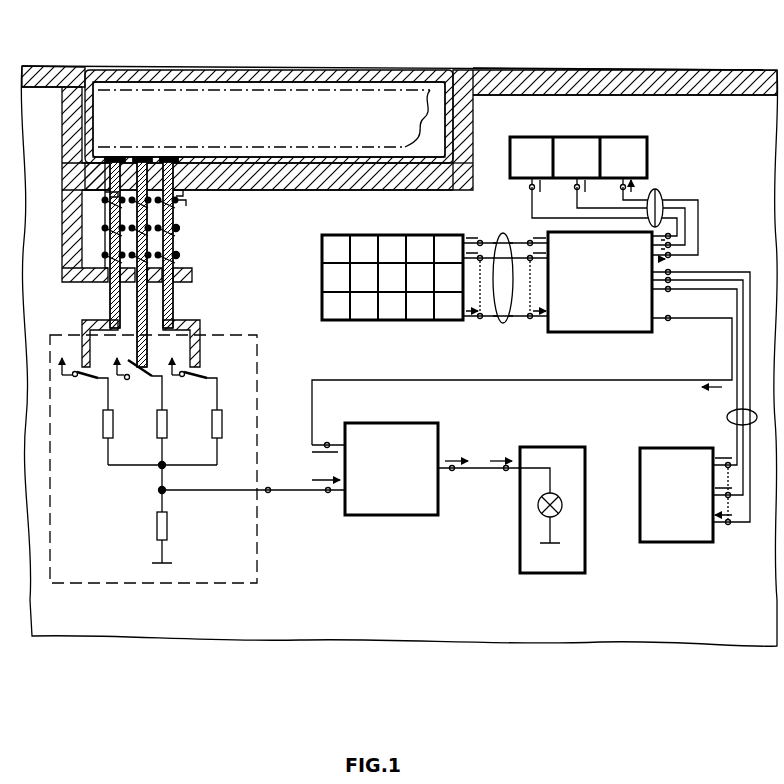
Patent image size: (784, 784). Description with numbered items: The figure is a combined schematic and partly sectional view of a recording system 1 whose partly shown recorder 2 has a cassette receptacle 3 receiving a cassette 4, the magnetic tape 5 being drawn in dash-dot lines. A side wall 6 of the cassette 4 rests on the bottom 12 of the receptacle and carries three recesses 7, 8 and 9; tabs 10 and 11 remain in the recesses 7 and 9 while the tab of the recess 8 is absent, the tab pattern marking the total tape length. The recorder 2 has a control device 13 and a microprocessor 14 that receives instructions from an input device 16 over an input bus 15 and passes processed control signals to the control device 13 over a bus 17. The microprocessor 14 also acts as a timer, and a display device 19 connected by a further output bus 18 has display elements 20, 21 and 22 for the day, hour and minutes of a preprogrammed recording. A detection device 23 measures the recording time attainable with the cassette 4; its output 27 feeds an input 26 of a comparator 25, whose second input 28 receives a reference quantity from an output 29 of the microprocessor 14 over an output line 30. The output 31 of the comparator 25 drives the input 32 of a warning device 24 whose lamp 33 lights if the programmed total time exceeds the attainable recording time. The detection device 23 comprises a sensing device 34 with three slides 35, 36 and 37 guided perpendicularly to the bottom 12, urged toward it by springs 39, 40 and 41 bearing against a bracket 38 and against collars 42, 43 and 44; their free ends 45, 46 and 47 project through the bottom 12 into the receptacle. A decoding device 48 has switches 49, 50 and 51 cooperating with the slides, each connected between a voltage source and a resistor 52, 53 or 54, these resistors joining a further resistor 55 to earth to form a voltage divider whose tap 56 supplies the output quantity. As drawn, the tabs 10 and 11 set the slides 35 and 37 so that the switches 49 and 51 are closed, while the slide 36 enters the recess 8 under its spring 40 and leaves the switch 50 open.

The recording system 1 is at (462, 67).
The recorder 2 is at (683, 69).
The cassette receptacle 3 is at (88, 69).
The cassette 4 is at (138, 68).
The magnetic tape 5 is at (330, 88).
The side wall 6 is at (318, 166).
The recess 7 is at (103, 159).
The recess 8 is at (131, 156).
The recess 9 is at (178, 157).
The tab 10 is at (115, 156).
The tab 11 is at (168, 156).
The bottom 12 is at (378, 180).
The control device 13 is at (666, 533).
The microprocessor 14 is at (565, 333).
The input bus 15 is at (503, 324).
The input device 16 is at (373, 324).
The bus 17 is at (727, 417).
The output bus 18 is at (664, 200).
The display device 19 is at (651, 153).
The display element 20 is at (533, 142).
The display element 21 is at (578, 142).
The display element 22 is at (628, 142).
The detection device 23 is at (245, 326).
The warning device 24 is at (548, 574).
The comparator 25 is at (395, 516).
The input 26 is at (328, 493).
The output 27 is at (268, 493).
The second input 28 is at (327, 443).
The output 29 is at (669, 321).
The output line 30 is at (506, 381).
The output 31 is at (452, 471).
The input 32 is at (505, 471).
The lamp 33 is at (566, 495).
The sensing device 34 is at (192, 238).
The slide 35 is at (111, 300).
The slide 36 is at (148, 296).
The slide 37 is at (182, 325).
The bracket 38 is at (80, 275).
The spring 39 is at (104, 228).
The spring 40 is at (178, 256).
The spring 41 is at (178, 228).
The collar 42 is at (108, 197).
The collar 43 is at (180, 192).
The collar 44 is at (185, 204).
The free end 45 is at (109, 175).
The free end 46 is at (143, 156).
The free end 47 is at (180, 165).
The decoding device 48 is at (256, 573).
The switch 49 is at (85, 380).
The switch 50 is at (140, 378).
The switch 51 is at (190, 380).
The resistor 52 is at (102, 427).
The resistor 53 is at (156, 427).
The resistor 54 is at (211, 427).
The further resistor 55 is at (157, 525).
The tap 56 is at (158, 490).